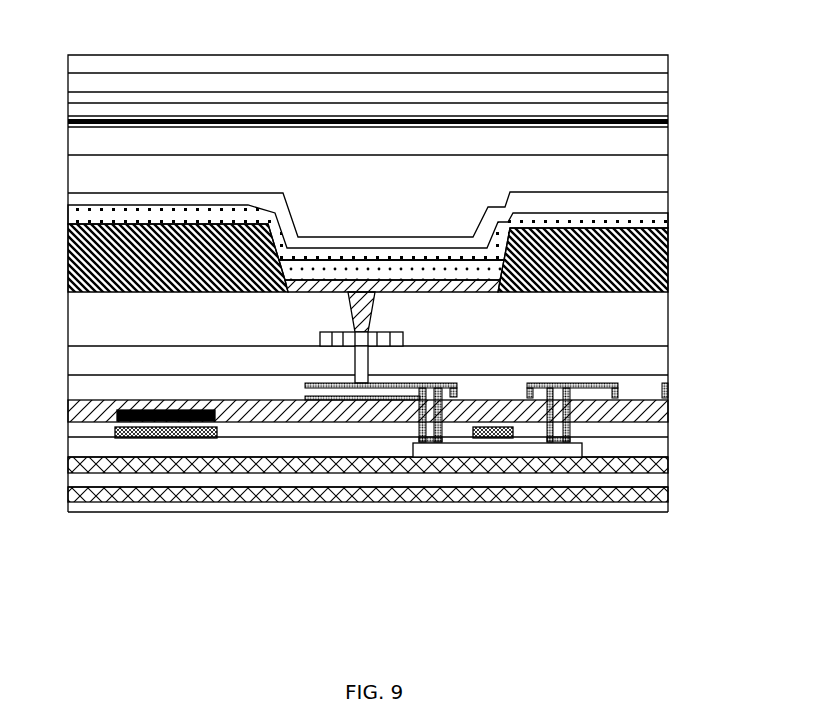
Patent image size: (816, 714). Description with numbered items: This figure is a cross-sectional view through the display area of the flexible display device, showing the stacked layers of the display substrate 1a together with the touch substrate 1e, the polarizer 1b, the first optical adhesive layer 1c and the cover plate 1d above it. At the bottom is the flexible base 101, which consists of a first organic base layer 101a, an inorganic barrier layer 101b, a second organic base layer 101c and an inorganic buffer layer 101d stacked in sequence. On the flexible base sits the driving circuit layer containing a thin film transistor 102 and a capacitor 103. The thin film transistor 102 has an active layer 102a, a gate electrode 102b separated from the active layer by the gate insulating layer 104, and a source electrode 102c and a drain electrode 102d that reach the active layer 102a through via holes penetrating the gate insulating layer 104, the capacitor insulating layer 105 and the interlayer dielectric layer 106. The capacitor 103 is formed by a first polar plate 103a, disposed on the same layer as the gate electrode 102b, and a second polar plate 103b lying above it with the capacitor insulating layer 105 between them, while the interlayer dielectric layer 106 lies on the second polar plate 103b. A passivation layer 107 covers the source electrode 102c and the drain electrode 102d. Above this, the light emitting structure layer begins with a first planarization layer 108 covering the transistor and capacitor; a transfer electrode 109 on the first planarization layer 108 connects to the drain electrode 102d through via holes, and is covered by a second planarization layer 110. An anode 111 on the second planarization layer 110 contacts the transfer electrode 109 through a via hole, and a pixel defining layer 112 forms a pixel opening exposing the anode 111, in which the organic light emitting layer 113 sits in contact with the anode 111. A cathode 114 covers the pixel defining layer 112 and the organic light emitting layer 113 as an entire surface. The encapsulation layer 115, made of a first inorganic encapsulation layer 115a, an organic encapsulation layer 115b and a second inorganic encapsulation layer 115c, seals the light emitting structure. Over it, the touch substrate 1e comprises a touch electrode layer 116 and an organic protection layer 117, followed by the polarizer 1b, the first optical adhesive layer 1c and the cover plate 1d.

The display substrate 1a is at (68, 128).
The polarizer 1b is at (68, 99).
The first optical adhesive layer 1c is at (68, 83).
The cover plate 1d is at (68, 63).
The touch substrate 1e is at (68, 105).
The flexible base 101 is at (425, 484).
The first organic base layer 101a is at (668, 507).
The inorganic barrier layer 101b is at (668, 490).
The second organic base layer 101c is at (668, 477).
The inorganic buffer layer 101d is at (668, 463).
The thin film transistor 102 is at (486, 492).
The active layer 102a is at (475, 450).
The gate electrode 102b is at (500, 438).
The source electrode 102c is at (597, 468).
The drain electrode 102d is at (372, 399).
The capacitor 103 is at (167, 502).
The first polar plate 103a is at (148, 438).
The second polar plate 103b is at (188, 421).
The gate insulating layer 104 is at (668, 445).
The capacitor insulating layer 105 is at (668, 428).
The interlayer dielectric layer 106 is at (668, 410).
The passivation layer 107 is at (668, 388).
The first planarization layer 108 is at (668, 362).
The transfer electrode 109 is at (322, 338).
The second planarization layer 110 is at (668, 320).
The anode 111 is at (462, 285).
The pixel defining layer 112 is at (668, 257).
The organic light emitting layer 113 is at (400, 275).
The cathode 114 is at (330, 262).
The encapsulation layer 115 is at (423, 193).
The first inorganic encapsulation layer 115a is at (668, 203).
The organic encapsulation layer 115b is at (668, 173).
The second inorganic encapsulation layer 115c is at (668, 138).
The touch electrode layer 116 is at (668, 121).
The organic protection layer 117 is at (668, 108).